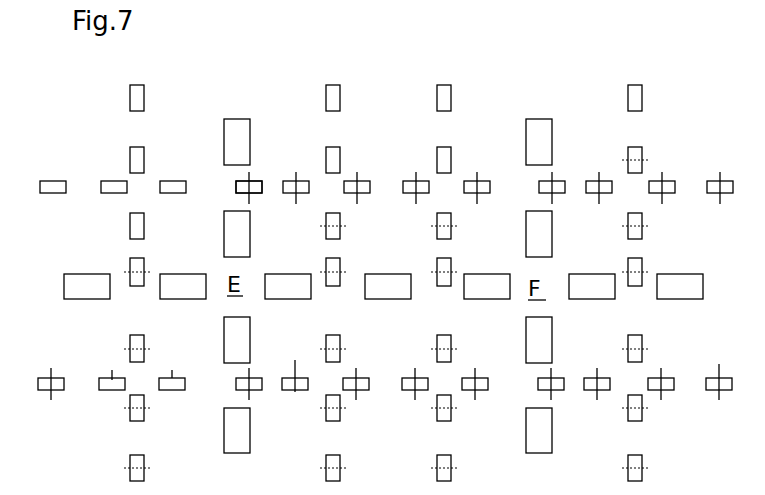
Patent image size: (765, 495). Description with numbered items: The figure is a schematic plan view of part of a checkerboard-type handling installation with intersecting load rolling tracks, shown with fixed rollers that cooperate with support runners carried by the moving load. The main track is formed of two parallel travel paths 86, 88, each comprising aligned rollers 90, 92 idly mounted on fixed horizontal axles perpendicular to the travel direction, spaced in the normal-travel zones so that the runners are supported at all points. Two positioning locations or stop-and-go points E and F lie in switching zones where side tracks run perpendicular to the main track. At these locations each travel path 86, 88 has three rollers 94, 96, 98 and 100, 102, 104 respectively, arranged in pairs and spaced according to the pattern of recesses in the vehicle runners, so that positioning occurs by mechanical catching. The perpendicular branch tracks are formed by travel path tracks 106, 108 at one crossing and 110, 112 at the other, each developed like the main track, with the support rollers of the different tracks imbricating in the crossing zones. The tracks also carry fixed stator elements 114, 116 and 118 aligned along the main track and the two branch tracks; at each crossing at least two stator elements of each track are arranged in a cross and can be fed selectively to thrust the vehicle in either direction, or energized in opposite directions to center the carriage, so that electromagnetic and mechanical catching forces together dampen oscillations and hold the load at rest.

The travel path 86 is at (714, 185).
The travel path 88 is at (716, 392).
The rollers 90 is at (102, 182).
The rollers 92 is at (108, 392).
The roller 94 is at (167, 184).
The roller 96 is at (259, 183).
The roller 98 is at (303, 183).
The roller 100 is at (166, 392).
The roller 102 is at (254, 392).
The roller 104 is at (298, 392).
The travel path track 106 is at (140, 92).
The travel path track 108 is at (334, 92).
The travel path track 110 is at (444, 93).
The travel path track 112 is at (638, 92).
The stator elements 114 is at (172, 292).
The stator elements 116 is at (228, 430).
The stator elements 118 is at (545, 232).